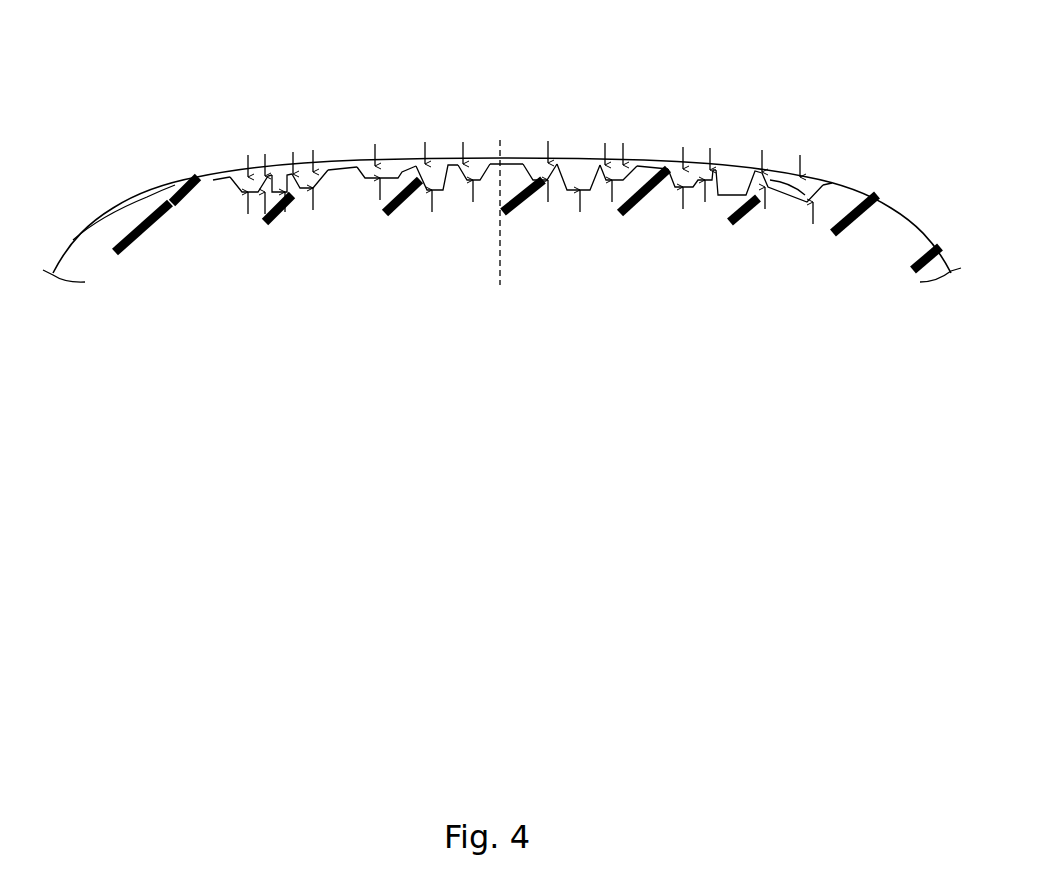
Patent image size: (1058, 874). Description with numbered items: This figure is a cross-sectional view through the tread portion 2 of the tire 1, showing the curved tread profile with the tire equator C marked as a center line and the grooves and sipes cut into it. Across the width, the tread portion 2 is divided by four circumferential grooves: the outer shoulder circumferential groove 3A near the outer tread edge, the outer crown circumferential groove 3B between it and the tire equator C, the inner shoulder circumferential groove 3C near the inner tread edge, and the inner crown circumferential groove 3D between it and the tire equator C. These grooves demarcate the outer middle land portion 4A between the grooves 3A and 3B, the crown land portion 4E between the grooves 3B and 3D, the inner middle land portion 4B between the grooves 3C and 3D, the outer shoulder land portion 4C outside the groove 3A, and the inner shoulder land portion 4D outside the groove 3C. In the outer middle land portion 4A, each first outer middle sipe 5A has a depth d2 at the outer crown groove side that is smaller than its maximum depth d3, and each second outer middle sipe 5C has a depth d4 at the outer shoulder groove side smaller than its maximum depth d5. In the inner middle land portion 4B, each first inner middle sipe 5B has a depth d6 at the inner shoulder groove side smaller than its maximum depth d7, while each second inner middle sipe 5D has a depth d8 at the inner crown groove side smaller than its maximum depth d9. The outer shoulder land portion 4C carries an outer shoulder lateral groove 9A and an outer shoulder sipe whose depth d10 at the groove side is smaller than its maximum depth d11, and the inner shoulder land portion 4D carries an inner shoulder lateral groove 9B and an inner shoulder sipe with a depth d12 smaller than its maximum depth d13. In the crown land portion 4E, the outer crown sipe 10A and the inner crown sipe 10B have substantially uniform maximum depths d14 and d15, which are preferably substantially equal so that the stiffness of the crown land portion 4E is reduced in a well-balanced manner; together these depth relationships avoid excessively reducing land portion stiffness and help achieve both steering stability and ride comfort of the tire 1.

The tire 1 is at (898, 68).
The tread portion 2 is at (870, 132).
The tire equator C is at (500, 201).
The outer shoulder circumferential groove 3A is at (279, 174).
The outer crown circumferential groove 3B is at (433, 164).
The inner shoulder circumferential groove 3C is at (733, 172).
The inner crown circumferential groove 3D is at (580, 163).
The outer middle land portion 4A is at (345, 168).
The inner middle land portion 4B is at (652, 167).
The outer shoulder land portion 4C is at (212, 180).
The inner shoulder land portion 4D is at (838, 185).
The crown land portion 4E is at (512, 162).
The first outer middle sipe 5A is at (380, 165).
The first inner middle sipe 5B is at (688, 170).
The second outer middle sipe 5C is at (309, 172).
The second inner middle sipe 5D is at (618, 164).
The outer shoulder lateral groove 9A is at (248, 176).
The inner shoulder lateral groove 9B is at (783, 180).
The outer crown sipe 10A is at (472, 163).
The inner crown sipe 10B is at (540, 163).
The depth of first outer middle sipe at outer crown circumferential groove side d2 is at (432, 193).
The maximum depth of first outer middle sipe d3 is at (380, 182).
The depth of second outer middle sipe at outer shoulder circumferential groove side d4 is at (286, 195).
The maximum depth of second outer middle sipe d5 is at (315, 192).
The depth of first inner middle sipe at inner shoulder circumferential groove side d6 is at (725, 198).
The maximum depth of first inner middle sipe d7 is at (683, 191).
The depth of second inner middle sipe at inner crown circumferential groove side d8 is at (586, 193).
The maximum depth of second inner middle sipe d9 is at (620, 184).
The depth of outer shoulder sipe at outer shoulder circumferential groove side d10 is at (264, 196).
The maximum depth of outer shoulder sipe d11 is at (247, 195).
The depth of inner shoulder sipe at inner shoulder circumferential groove side d12 is at (765, 190).
The maximum depth of inner shoulder sipe d13 is at (813, 205).
The maximum depth of outer crown sipe d14 is at (473, 184).
The maximum depth of inner crown sipe d15 is at (548, 184).